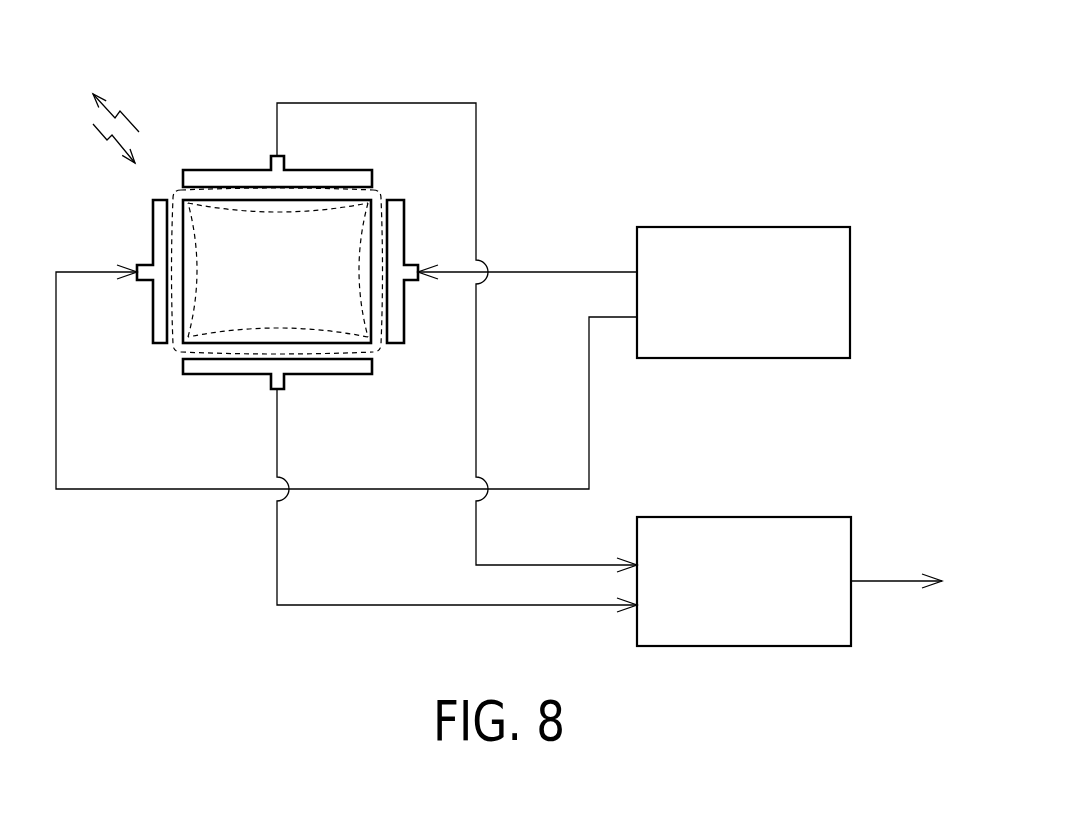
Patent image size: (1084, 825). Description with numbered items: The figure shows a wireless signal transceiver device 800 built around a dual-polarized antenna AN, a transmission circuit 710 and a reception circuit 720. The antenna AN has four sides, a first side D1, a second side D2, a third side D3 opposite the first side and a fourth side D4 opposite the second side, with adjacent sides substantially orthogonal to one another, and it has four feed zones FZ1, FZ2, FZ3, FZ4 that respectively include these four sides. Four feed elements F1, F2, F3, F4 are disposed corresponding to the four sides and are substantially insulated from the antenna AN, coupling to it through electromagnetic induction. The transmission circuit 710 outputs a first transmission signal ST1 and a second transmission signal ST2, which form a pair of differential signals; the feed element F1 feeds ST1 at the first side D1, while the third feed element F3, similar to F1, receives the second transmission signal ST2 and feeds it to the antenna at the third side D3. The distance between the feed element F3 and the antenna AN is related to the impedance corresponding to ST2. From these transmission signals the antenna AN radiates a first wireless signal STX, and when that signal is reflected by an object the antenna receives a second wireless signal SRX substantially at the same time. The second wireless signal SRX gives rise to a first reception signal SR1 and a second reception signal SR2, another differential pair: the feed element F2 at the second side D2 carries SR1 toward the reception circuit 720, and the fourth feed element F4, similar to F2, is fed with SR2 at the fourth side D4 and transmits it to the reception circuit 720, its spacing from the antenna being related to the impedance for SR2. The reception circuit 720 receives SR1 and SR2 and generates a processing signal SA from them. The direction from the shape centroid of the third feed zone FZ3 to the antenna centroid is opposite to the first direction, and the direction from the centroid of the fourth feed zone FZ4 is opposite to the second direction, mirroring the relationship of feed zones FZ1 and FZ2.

The wireless signal transceiver device 800 is at (750, 105).
The transmission circuit 710 is at (768, 306).
The reception circuit 720 is at (768, 597).
The dual-polarized antenna AN is at (277, 271).
The feed element F1 is at (396, 315).
The feed element F2 is at (223, 367).
The third feed element F3 is at (158, 309).
The fourth feed element F4 is at (218, 178).
The feed zone FZ1 is at (384, 242).
The feed zone FZ2 is at (320, 356).
The third feed zone FZ3 is at (174, 223).
The fourth feed zone FZ4 is at (237, 188).
The first side D1 is at (376, 217).
The second side D2 is at (342, 344).
The third side D3 is at (183, 333).
The fourth side D4 is at (332, 200).
The first transmission signal ST1 is at (527, 255).
The second transmission signal ST2 is at (346, 377).
The first reception signal SR1 is at (457, 516).
The second reception signal SR2 is at (457, 337).
The processing signal SA is at (896, 563).
The first wireless signal STX is at (133, 102).
The second wireless signal SRX is at (101, 158).